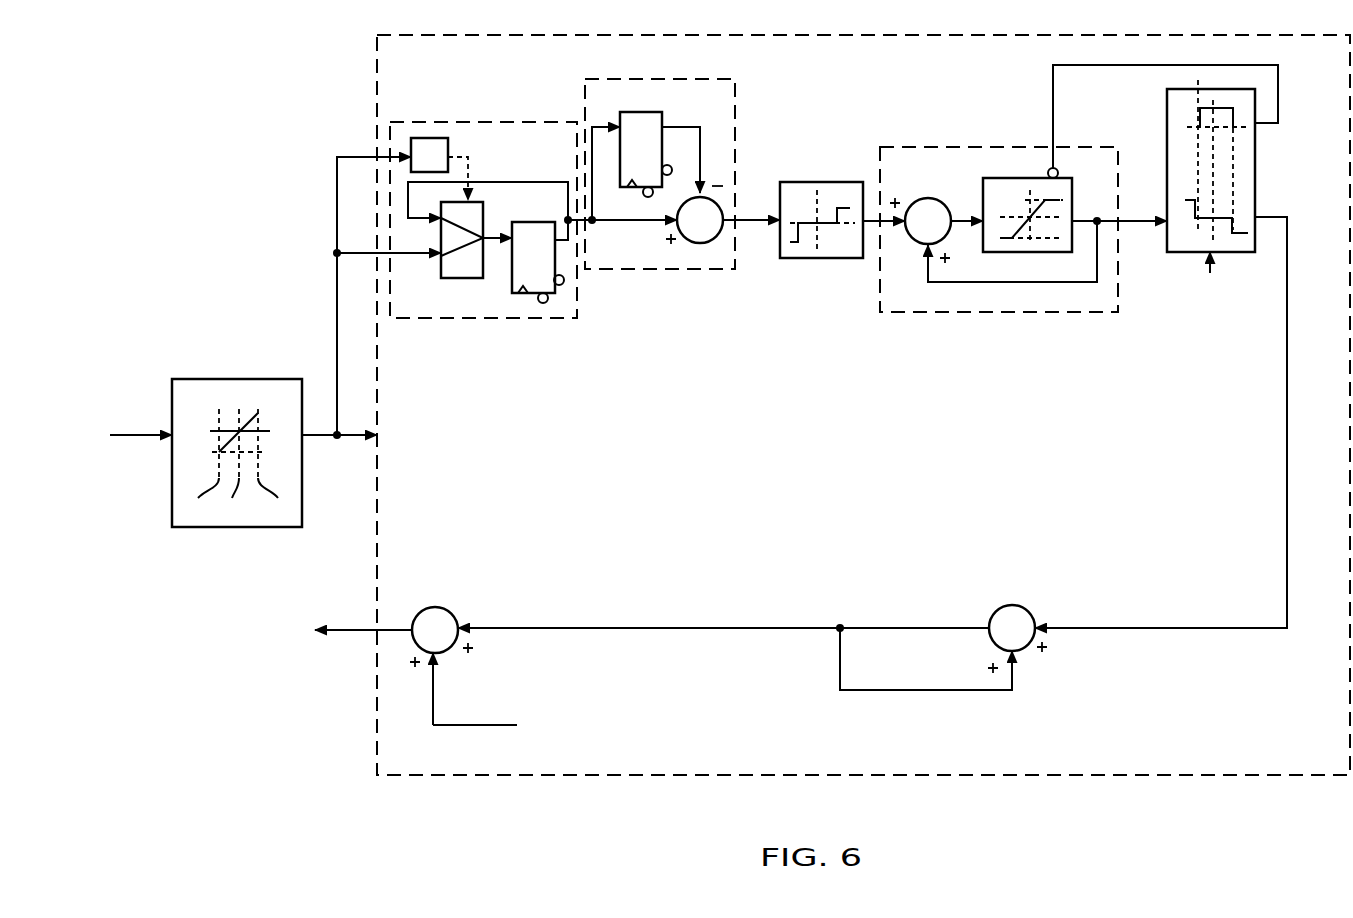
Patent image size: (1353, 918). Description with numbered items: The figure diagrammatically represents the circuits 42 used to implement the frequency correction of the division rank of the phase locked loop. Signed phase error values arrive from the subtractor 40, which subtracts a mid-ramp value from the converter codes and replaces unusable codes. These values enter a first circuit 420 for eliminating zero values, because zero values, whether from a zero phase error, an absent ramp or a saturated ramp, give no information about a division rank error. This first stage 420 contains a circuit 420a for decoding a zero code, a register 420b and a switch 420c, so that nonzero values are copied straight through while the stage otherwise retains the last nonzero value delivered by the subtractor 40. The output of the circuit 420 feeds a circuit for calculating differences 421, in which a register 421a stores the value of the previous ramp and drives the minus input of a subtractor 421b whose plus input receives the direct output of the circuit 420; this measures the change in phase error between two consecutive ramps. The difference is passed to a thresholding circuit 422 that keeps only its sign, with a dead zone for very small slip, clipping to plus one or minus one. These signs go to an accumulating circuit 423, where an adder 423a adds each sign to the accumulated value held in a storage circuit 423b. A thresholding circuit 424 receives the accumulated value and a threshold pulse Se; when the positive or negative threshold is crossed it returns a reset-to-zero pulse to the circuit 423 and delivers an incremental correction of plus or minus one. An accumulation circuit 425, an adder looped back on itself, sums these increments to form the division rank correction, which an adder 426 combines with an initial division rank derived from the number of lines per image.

The subtractor 40 is at (222, 379).
The frequency correction circuits 42 is at (1113, 776).
The first circuit for eliminating zero values 420 is at (498, 318).
The circuit for decoding a 0 code 420a is at (448, 148).
The flip-flop register 420b is at (564, 287).
The switch 420c is at (458, 278).
The circuit for calculating differences 421 is at (735, 119).
The register RD 421a is at (645, 112).
The subtractor 421b is at (708, 243).
The thresholding circuit 422 is at (838, 182).
The circuit for accumulating the sign 423 is at (1052, 312).
The adder 423a is at (915, 241).
The storage circuit 423b is at (1025, 178).
The thresholding circuit 424 is at (1255, 183).
The accumulation circuit 425 is at (1010, 605).
The adder 426 is at (435, 607).